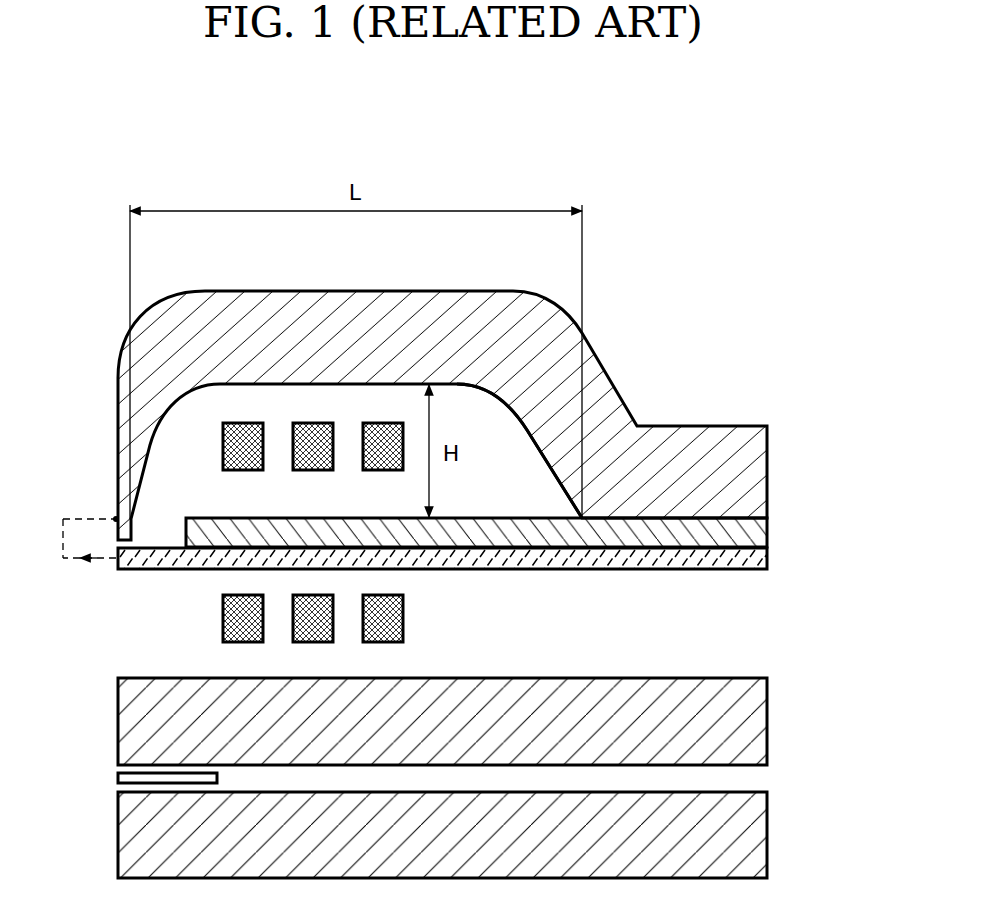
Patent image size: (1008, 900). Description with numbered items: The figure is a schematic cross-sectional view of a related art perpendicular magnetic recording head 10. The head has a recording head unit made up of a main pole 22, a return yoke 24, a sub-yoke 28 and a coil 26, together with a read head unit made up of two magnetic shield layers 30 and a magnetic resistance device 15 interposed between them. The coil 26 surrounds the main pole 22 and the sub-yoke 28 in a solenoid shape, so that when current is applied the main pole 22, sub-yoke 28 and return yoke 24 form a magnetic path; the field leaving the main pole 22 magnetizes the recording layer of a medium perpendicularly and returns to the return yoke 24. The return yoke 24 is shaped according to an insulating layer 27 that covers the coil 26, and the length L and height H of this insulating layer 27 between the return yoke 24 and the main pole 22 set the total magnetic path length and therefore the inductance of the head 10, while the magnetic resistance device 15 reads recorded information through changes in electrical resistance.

The perpendicular magnetic recording head 10 is at (708, 282).
The magnetic resistance device 15 is at (118, 777).
The main pole 22 is at (757, 561).
The return yoke 24 is at (757, 467).
The coil 26 is at (247, 423).
The insulating layer 27 is at (567, 393).
The sub-yoke 28 is at (757, 535).
The magnetic shield layers 30 is at (757, 728).